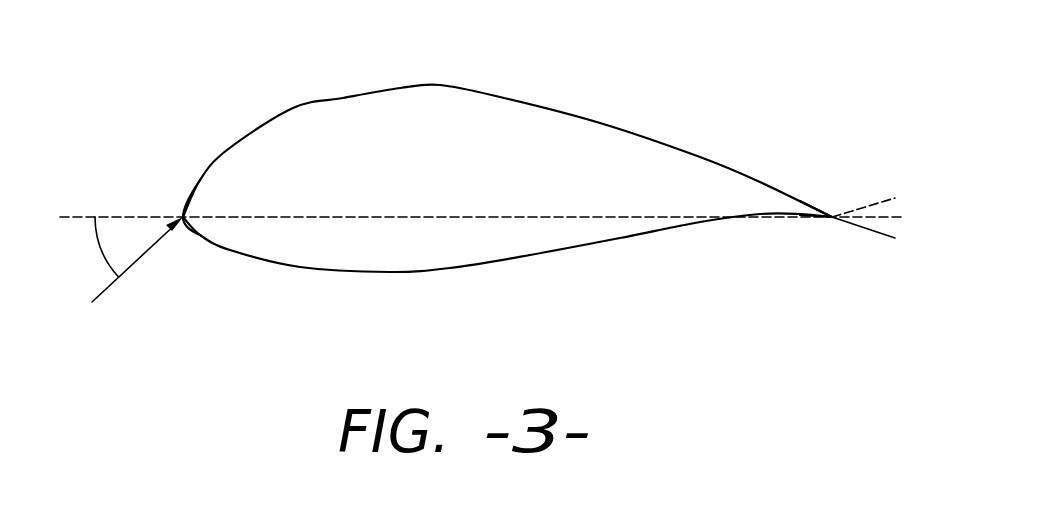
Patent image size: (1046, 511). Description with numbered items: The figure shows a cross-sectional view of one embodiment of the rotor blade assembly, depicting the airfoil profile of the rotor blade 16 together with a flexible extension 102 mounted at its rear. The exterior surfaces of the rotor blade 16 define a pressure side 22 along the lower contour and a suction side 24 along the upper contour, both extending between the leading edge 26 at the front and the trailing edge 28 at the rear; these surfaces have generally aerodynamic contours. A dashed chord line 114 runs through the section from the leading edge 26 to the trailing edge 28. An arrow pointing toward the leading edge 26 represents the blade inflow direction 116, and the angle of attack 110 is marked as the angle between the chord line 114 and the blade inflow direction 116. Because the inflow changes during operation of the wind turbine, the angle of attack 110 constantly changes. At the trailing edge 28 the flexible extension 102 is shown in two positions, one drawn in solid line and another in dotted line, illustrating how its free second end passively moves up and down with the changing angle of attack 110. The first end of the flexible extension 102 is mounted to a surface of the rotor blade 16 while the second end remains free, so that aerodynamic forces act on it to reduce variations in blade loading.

The rotor blade 16 is at (462, 179).
The pressure side 22 is at (383, 270).
The suction side 24 is at (345, 100).
The leading edge 26 is at (182, 217).
The trailing edge 28 is at (832, 220).
The flexible extension 102 is at (868, 208).
The angle of attack 110 is at (96, 248).
The chord line 114 is at (118, 217).
The blade inflow direction 116 is at (103, 291).